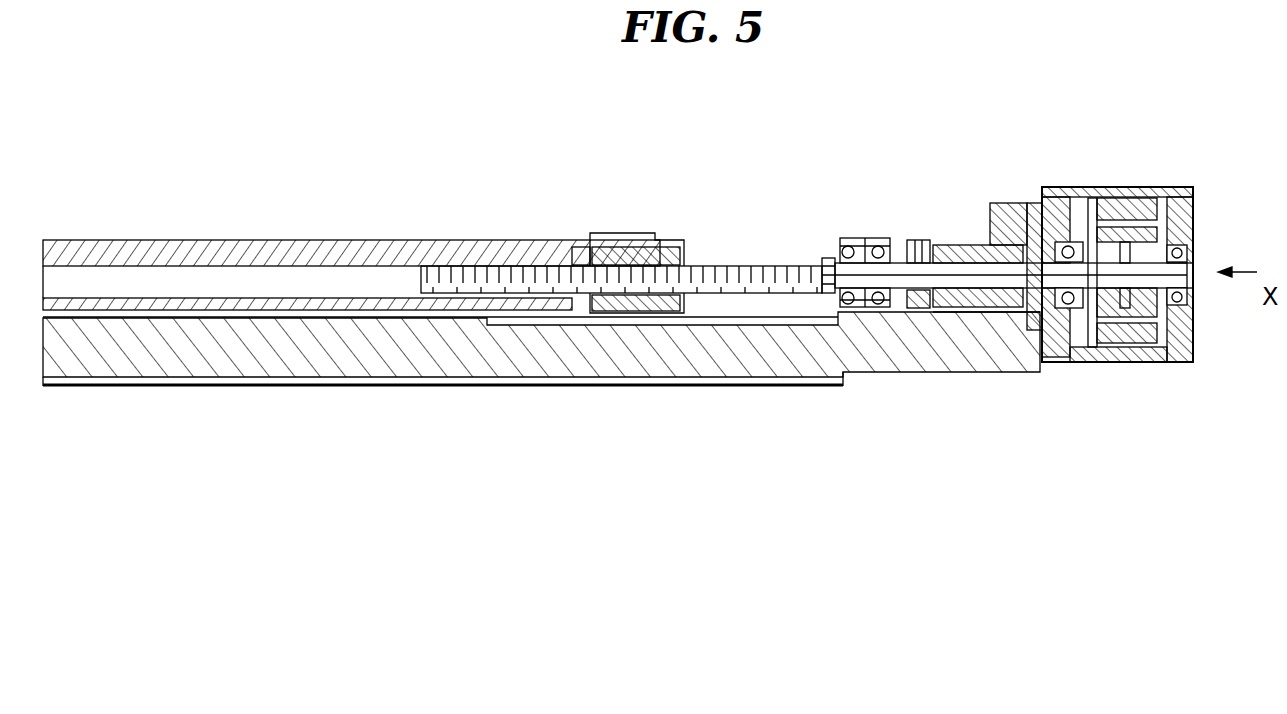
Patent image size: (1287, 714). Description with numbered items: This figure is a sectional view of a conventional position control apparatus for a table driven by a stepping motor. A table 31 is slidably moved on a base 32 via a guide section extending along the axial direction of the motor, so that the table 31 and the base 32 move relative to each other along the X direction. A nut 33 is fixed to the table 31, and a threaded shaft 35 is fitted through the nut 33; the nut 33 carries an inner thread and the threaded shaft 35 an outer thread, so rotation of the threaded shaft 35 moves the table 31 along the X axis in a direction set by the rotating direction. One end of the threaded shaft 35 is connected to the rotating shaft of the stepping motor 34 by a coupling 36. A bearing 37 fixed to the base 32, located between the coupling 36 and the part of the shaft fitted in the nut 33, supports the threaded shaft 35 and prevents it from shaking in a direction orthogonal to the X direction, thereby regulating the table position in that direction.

The table 31 is at (323, 247).
The base 32 is at (348, 373).
The nut 33 is at (672, 240).
The stepping motor 34 is at (1115, 260).
The threaded shaft 35 is at (722, 265).
The coupling 36 is at (968, 243).
The bearing 37 is at (871, 240).